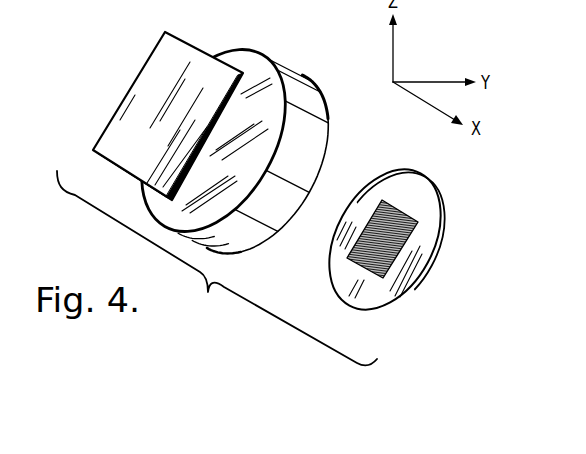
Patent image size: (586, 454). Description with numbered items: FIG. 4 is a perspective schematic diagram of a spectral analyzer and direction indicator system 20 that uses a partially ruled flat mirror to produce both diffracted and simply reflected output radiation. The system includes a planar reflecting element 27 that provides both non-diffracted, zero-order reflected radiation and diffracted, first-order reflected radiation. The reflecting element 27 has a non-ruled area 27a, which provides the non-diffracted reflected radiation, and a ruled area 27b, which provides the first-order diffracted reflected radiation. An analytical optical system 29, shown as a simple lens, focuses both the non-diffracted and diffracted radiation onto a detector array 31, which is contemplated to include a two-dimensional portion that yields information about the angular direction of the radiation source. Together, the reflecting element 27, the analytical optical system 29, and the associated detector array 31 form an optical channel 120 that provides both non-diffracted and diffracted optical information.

The spectral analyzer and direction indicator system 20 is at (451, 291).
The planar reflecting element 27 is at (393, 229).
The non-ruled area 27a is at (427, 208).
The ruled area 27b is at (385, 283).
The analytical optical system 29 is at (281, 228).
The detector array 31 is at (98, 139).
The optical channel 120 is at (217, 268).